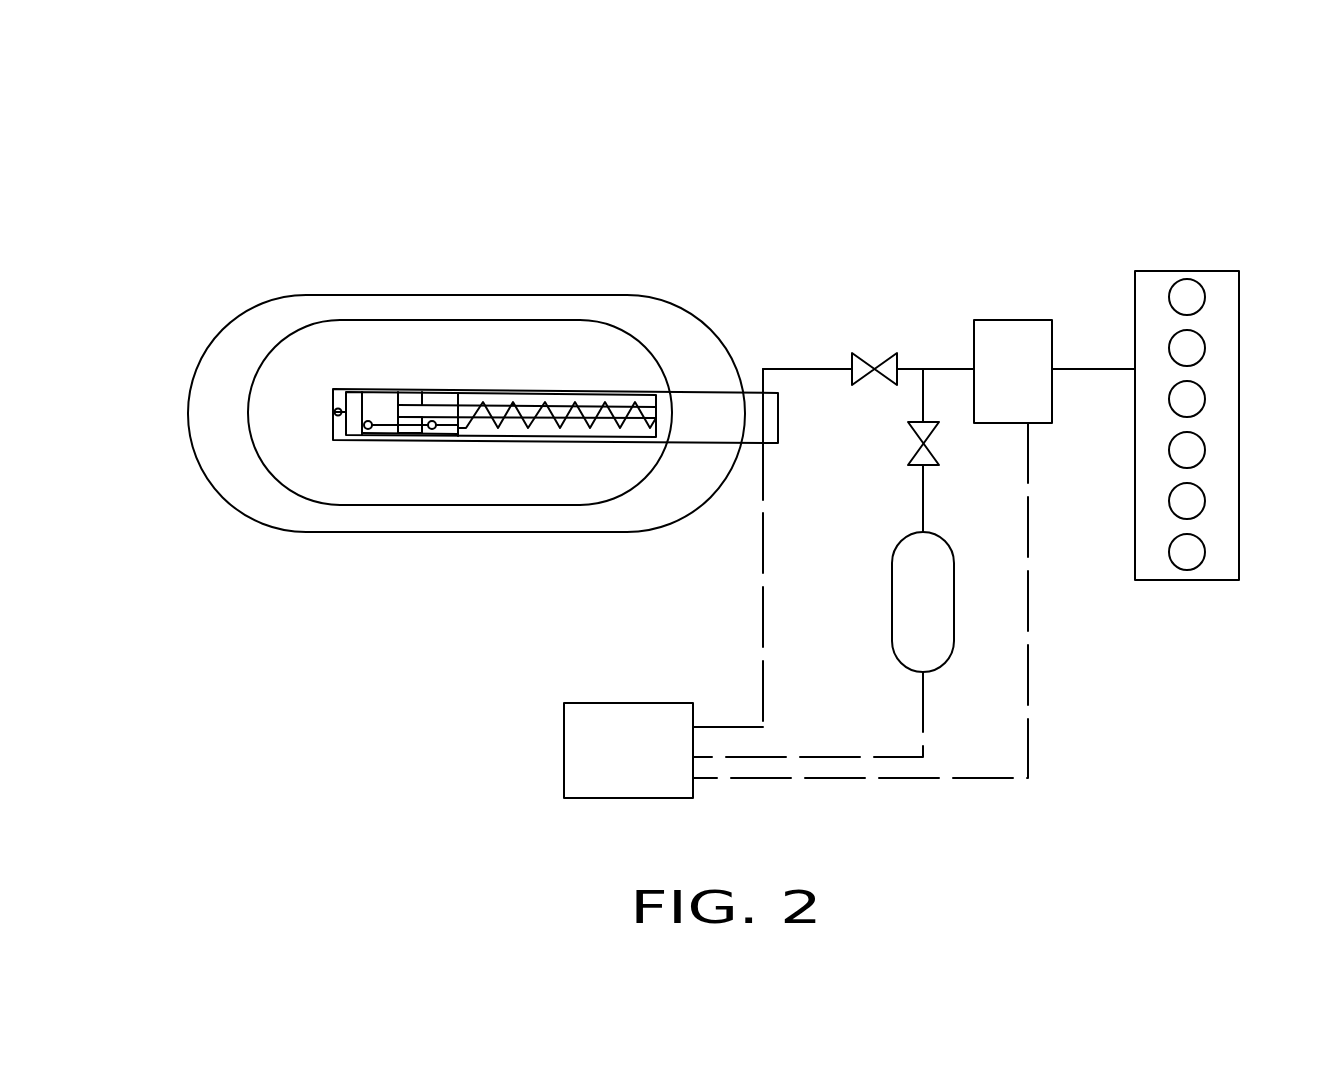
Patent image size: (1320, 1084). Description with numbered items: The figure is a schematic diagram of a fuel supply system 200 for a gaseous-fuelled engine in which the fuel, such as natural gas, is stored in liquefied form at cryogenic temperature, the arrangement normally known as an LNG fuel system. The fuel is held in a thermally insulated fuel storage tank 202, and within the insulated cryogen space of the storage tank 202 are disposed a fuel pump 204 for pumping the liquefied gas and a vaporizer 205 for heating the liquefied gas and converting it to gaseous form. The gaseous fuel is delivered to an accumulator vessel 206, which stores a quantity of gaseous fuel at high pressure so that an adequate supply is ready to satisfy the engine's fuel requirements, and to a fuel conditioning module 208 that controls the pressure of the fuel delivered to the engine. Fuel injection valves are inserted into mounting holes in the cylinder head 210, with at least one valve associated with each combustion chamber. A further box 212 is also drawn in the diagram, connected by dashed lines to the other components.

The fuel supply system 200 is at (404, 174).
The fuel storage tank 202 is at (465, 347).
The fuel pump 204 is at (382, 408).
The vaporizer 205 is at (560, 423).
The accumulator vessel 206 is at (920, 635).
The fuel conditioning module 208 is at (1014, 347).
The cylinder head 210 is at (1148, 285).
The controller 212 is at (627, 752).